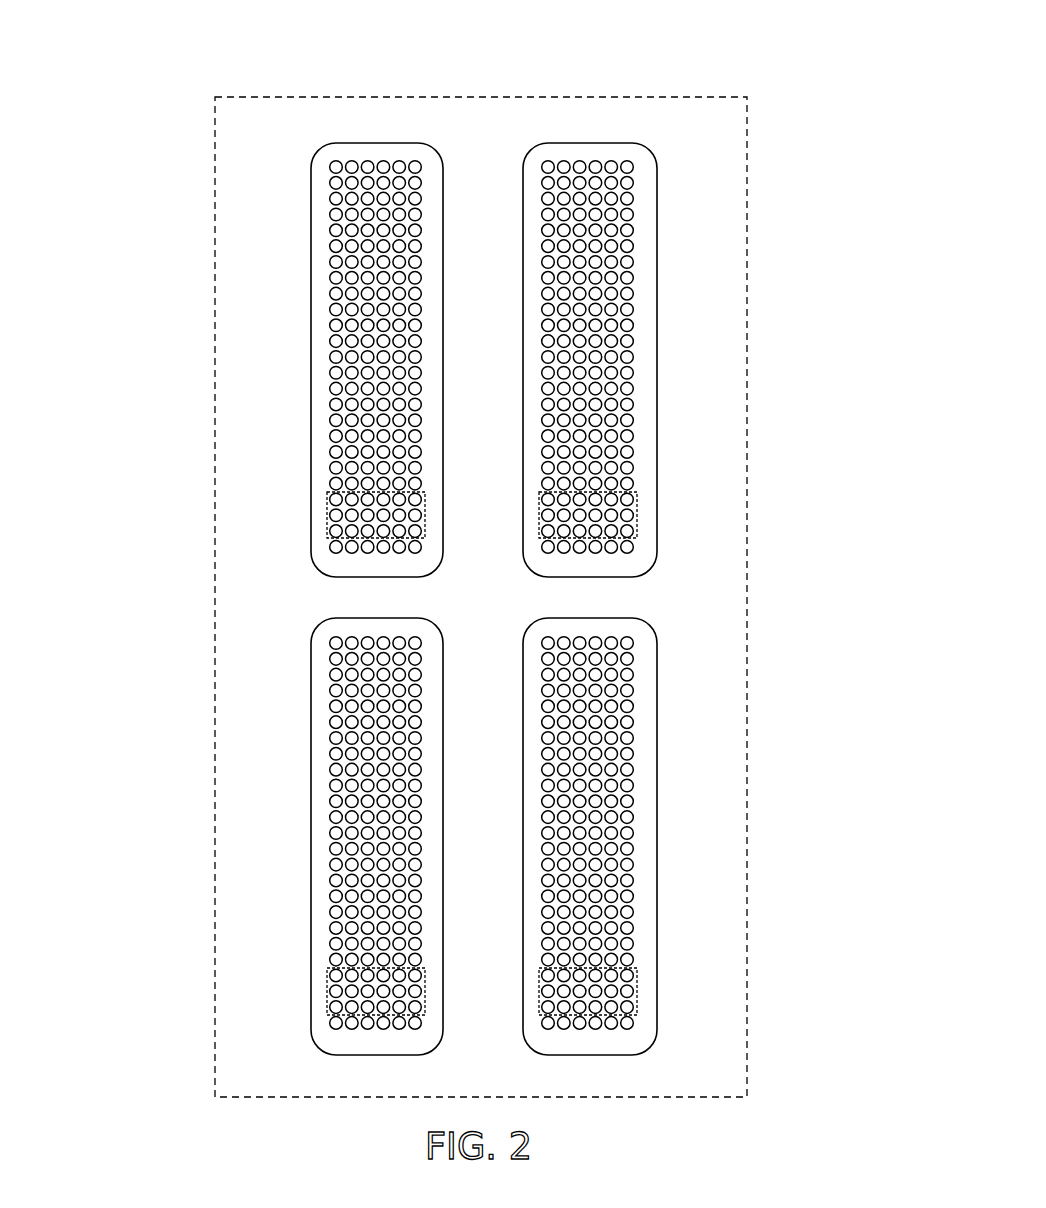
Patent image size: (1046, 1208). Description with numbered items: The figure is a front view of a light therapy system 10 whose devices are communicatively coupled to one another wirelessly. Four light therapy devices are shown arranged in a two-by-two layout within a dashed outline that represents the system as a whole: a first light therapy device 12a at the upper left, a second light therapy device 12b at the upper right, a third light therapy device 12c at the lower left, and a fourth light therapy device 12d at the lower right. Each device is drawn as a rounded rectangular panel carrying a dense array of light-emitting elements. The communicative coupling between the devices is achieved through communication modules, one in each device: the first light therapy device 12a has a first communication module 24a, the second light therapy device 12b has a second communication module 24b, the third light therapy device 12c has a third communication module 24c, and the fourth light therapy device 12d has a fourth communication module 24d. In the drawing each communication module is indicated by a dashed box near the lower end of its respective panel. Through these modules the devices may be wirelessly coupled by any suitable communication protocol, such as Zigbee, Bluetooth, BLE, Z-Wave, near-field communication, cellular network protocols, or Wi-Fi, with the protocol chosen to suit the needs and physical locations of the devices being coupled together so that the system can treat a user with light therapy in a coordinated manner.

The light therapy system 10 is at (652, 52).
The first light therapy device 12a is at (306, 205).
The second light therapy device 12b is at (662, 284).
The third light therapy device 12c is at (306, 771).
The fourth light therapy device 12d is at (662, 717).
The first communication module 24a is at (321, 528).
The second communication module 24b is at (645, 519).
The third communication module 24c is at (321, 994).
The fourth communication module 24d is at (645, 987).